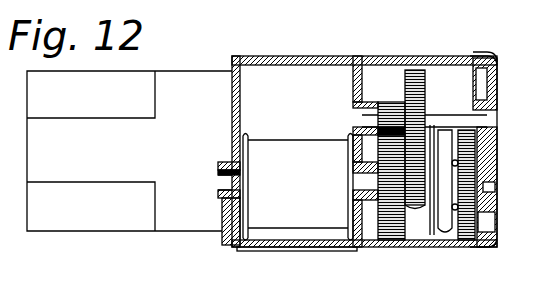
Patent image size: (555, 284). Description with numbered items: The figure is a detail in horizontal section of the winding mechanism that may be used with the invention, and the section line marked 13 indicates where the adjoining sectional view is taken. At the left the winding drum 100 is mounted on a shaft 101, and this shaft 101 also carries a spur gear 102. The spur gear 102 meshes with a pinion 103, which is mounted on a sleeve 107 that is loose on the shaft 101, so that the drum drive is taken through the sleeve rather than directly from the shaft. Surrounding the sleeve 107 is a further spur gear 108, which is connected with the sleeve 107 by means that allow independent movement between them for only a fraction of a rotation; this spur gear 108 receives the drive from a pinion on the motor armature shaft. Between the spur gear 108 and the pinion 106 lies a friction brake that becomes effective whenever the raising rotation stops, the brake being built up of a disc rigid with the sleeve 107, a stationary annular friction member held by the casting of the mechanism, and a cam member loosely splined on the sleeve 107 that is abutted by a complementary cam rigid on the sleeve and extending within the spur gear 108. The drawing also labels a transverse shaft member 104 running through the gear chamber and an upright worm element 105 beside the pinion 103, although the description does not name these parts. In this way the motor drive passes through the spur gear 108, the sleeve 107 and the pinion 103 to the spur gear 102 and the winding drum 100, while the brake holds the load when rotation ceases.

The winding drum 100 is at (304, 140).
The shaft 101 is at (218, 183).
The spur gear 102 is at (392, 240).
The pinion 103 is at (383, 102).
The shaft 104 is at (455, 115).
The worm shaft 105 is at (420, 70).
The pinion 106 is at (418, 206).
The sleeve 107 is at (357, 172).
The spur gear 108 is at (468, 240).
The section line 13- 13 is at (335, 176).